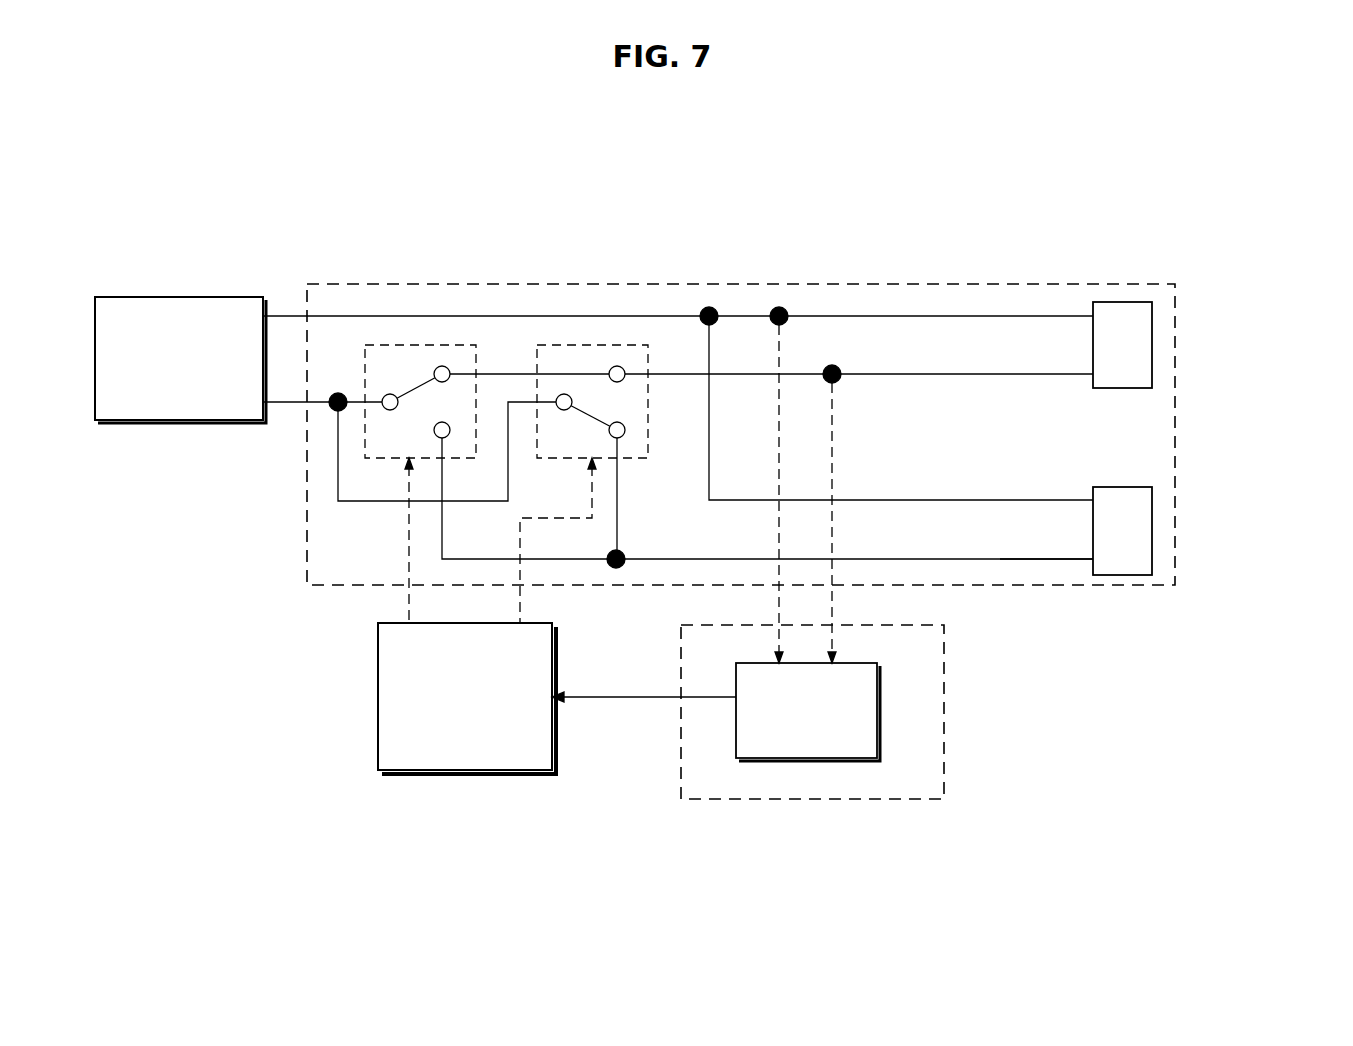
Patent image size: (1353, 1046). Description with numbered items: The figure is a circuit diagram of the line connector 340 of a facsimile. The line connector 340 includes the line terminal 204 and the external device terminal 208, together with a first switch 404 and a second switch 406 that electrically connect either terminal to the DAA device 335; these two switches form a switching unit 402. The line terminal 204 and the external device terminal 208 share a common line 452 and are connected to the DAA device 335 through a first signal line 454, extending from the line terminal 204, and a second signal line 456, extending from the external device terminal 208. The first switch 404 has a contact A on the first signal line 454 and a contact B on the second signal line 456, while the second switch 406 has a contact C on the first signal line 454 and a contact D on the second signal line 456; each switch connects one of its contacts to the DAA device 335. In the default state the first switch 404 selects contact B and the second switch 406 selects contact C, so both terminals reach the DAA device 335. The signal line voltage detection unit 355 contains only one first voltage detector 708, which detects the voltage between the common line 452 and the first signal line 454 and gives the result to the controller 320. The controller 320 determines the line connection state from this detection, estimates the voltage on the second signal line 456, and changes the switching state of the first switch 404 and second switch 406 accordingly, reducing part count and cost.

The DAA device 335 is at (180, 297).
The switching unit 402 is at (597, 233).
The second switch 406 is at (413, 345).
The first switch 404 is at (578, 345).
The common line 452 is at (817, 314).
The first signal line 454 is at (978, 377).
The second signal line 456 is at (1033, 558).
The line connector 340 is at (953, 283).
The line terminal 204 is at (1152, 333).
The external device terminal 208 is at (1152, 527).
The controller 320 is at (378, 693).
The first voltage detector 708 is at (880, 697).
The signal line voltage detection unit 355 is at (944, 693).